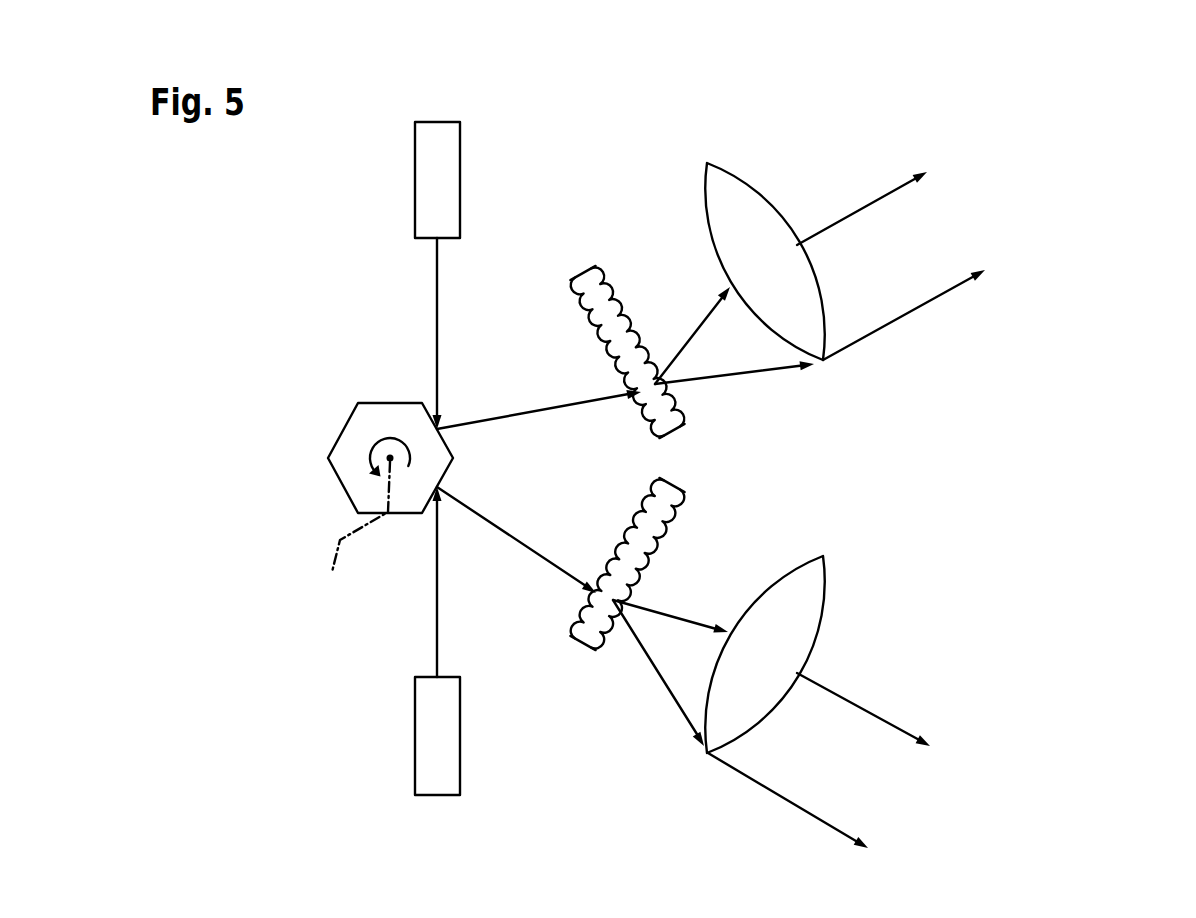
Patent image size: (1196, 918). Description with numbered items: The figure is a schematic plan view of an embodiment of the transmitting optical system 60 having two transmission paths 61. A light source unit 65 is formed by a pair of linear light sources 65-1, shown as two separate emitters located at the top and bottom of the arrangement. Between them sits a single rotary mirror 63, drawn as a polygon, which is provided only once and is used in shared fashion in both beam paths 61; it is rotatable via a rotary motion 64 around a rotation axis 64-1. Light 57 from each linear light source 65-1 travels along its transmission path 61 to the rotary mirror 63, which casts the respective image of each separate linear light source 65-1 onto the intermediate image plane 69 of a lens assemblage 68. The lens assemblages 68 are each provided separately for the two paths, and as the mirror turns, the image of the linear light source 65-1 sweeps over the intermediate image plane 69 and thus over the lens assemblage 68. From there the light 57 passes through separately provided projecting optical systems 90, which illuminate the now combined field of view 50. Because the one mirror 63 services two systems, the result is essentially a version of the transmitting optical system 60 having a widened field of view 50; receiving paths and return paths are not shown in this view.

The field of view 50 is at (1110, 205).
The transmitting optical system 60 is at (222, 204).
The light source unit 65 is at (374, 458).
The linear light source 65-1 is at (428, 188).
The transmission path 61 is at (402, 304).
The light beam 57 is at (437, 330).
The rotary mirror 63 is at (348, 482).
The rotary motion 64 is at (392, 436).
The rotation axis 64-1 is at (353, 534).
The lens assemblage 68 is at (578, 272).
The intermediate image plane 69 is at (559, 283).
The projecting optical system 90 is at (753, 190).